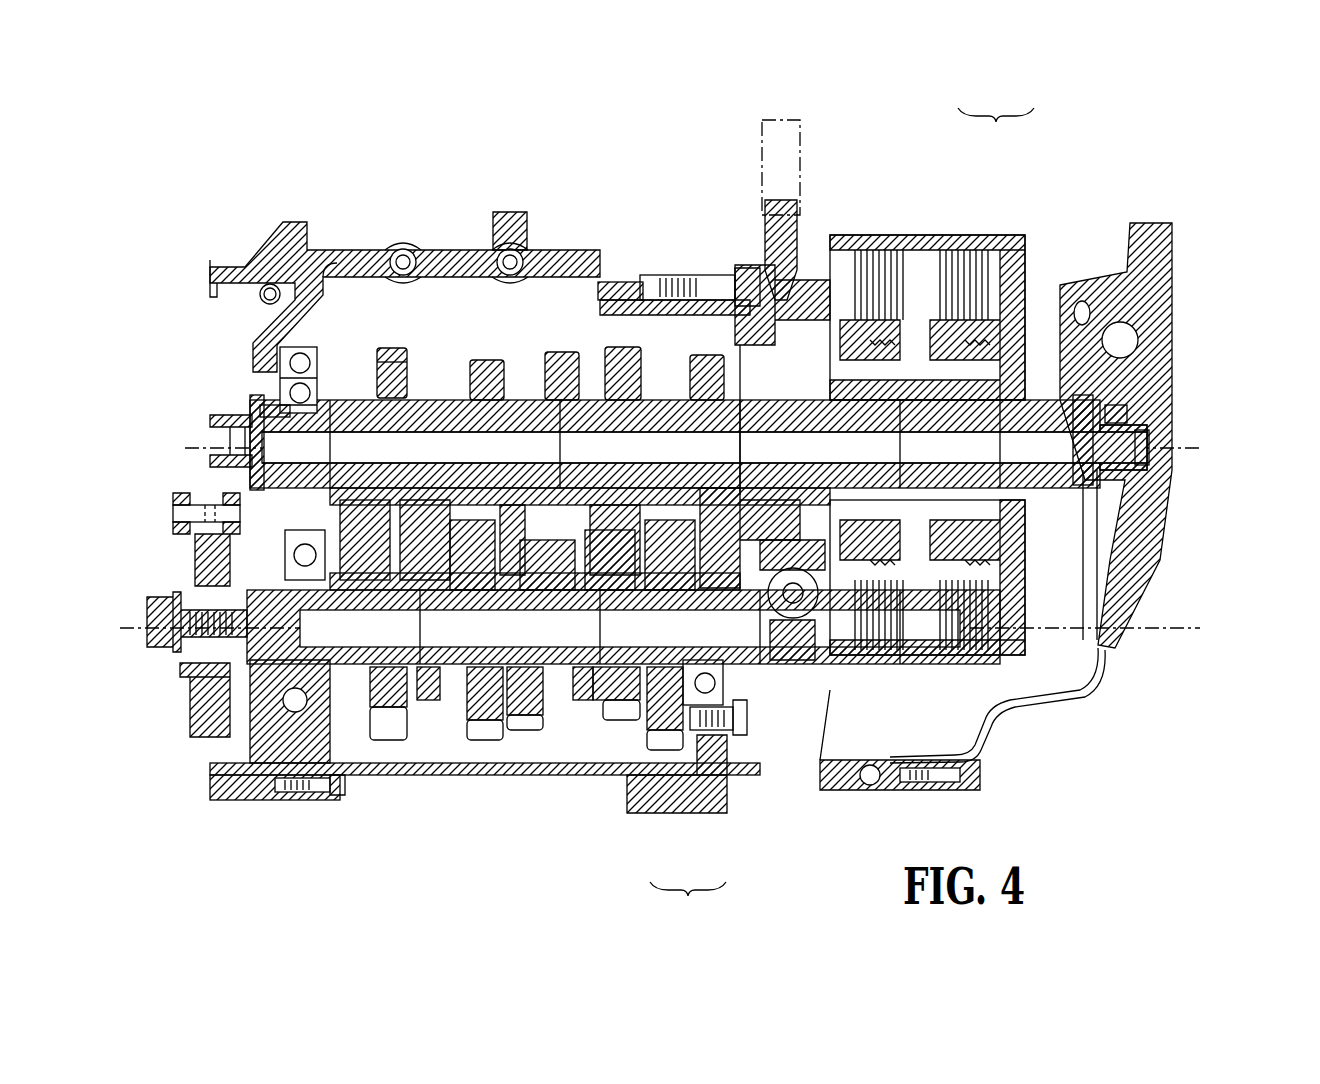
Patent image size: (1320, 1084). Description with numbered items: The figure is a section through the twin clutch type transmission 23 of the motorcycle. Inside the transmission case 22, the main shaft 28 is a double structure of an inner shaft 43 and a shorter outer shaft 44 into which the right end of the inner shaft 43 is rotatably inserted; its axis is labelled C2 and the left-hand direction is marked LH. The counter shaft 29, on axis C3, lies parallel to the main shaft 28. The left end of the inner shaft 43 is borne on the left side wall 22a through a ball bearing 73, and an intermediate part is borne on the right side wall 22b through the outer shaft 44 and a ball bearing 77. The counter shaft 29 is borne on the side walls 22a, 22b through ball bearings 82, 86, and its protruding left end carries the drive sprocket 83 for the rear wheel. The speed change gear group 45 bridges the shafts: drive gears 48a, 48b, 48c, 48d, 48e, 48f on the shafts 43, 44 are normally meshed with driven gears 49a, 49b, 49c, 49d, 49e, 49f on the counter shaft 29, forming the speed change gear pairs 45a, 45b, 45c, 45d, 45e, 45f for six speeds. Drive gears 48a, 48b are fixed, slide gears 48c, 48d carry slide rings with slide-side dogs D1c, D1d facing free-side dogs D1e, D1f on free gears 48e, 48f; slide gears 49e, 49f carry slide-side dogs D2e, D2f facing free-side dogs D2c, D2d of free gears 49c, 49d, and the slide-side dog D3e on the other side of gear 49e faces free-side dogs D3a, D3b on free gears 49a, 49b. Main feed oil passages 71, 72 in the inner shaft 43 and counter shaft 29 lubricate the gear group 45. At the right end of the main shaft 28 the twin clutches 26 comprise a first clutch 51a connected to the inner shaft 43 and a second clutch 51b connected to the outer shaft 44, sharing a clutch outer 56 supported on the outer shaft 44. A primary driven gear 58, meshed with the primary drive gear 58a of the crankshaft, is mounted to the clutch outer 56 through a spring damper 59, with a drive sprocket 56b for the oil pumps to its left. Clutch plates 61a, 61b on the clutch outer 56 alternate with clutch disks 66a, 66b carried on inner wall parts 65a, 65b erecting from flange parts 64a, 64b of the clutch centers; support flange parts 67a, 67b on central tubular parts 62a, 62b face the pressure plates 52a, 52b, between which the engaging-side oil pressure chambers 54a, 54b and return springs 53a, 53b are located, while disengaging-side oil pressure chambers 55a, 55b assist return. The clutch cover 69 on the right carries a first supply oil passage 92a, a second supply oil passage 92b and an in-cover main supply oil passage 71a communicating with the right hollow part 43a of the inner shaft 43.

The transmission case 22 is at (248, 262).
The left side wall 22a is at (280, 752).
The right side wall 22b is at (727, 785).
The twin clutch type transmission 23 is at (1085, 200).
The twin clutches 26 is at (996, 97).
The main shaft 28 is at (688, 902).
The counter shaft 29 is at (488, 750).
The inner shaft 43 is at (650, 690).
The right hollow part 43a is at (1085, 460).
The outer shaft 44 is at (690, 700).
The speed change gear group 45 is at (480, 700).
The speed change gear pair 45a is at (118, 372).
The speed change gear pair 45b is at (679, 361).
The speed change gear pair 45c is at (438, 345).
The speed change gear pair 45d is at (523, 337).
The speed change gear pair 45e is at (343, 331).
The speed change gear pair 45f is at (595, 377).
The drive gear 48a is at (300, 382).
The drive gear 48b is at (690, 360).
The drive gear 48c is at (487, 365).
The drive gear 48d is at (562, 355).
The drive gear 48e is at (390, 353).
The drive gear 48f is at (628, 350).
The driven gear 49a is at (247, 432).
The driven gear 49b is at (665, 520).
The driven gear 49c is at (470, 525).
The driven gear 49d is at (545, 540).
The driven gear 49e is at (365, 500).
The driven gear 49f is at (605, 530).
The first disk clutch 51a is at (978, 220).
The second disk clutch 51b is at (920, 218).
The pressure plate 52a is at (1000, 580).
The pressure plate 52b is at (940, 600).
The return spring 53a is at (985, 340).
The return spring 53b is at (812, 300).
The engaging-side oil pressure chamber 54a is at (1005, 360).
The engaging-side oil pressure chamber 54b is at (900, 347).
The disengaging-side oil pressure chamber 55a is at (985, 333).
The disengaging-side oil pressure chamber 55b is at (905, 320).
The clutch outer 56 is at (870, 768).
The drive sprocket 56b is at (790, 690).
The primary driven gear 58 is at (790, 265).
The primary drive gear 58a is at (762, 145).
The spring damper 59 is at (800, 615).
The clutch plates 61a is at (967, 347).
The clutch plates 61b is at (876, 300).
The central tubular part 62a is at (1020, 510).
The central tubular part 62b is at (1010, 528).
The flange part 64a is at (940, 600).
The flange part 64b is at (850, 640).
The inner wall part 65a is at (960, 580).
The inner wall part 65b is at (900, 640).
The clutch disks 66a is at (980, 315).
The clutch disks 66b is at (840, 327).
The support flange part 67a is at (1000, 560).
The support flange part 67b is at (1000, 590).
The clutch cover 69 is at (1182, 246).
The main feed oil passage 71 is at (432, 440).
The in-cover main supply oil passage 71a is at (1118, 413).
The main feed oil passage 72 is at (320, 690).
The ball bearing 73 is at (300, 390).
The ball bearing 77 is at (703, 367).
The ball bearing 82 is at (300, 792).
The drive sprocket 83 is at (205, 713).
The ball bearing 86 is at (745, 722).
The first supply oil passage 92a is at (1147, 442).
The second supply oil passage 92b is at (1112, 540).
The slide-side dog D1c is at (380, 690).
The slide-side dog D1d is at (560, 700).
The free-side dog D1e is at (355, 745).
The free-side dog D1f is at (580, 700).
The free-side dog D2c is at (450, 690).
The free-side dog D2d is at (505, 700).
The slide-side dog D2e is at (420, 690).
The slide-side dog D2f is at (530, 700).
The free-side dog D3a is at (305, 552).
The free-side dog D3b is at (630, 720).
The slide-side dog D3e is at (290, 603).
The main shaft axis C2 is at (185, 450).
The counter shaft axis C3 is at (140, 630).
The left-hand direction LH is at (132, 441).